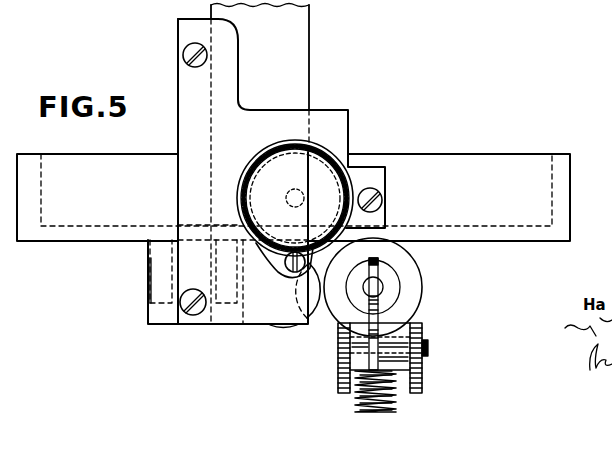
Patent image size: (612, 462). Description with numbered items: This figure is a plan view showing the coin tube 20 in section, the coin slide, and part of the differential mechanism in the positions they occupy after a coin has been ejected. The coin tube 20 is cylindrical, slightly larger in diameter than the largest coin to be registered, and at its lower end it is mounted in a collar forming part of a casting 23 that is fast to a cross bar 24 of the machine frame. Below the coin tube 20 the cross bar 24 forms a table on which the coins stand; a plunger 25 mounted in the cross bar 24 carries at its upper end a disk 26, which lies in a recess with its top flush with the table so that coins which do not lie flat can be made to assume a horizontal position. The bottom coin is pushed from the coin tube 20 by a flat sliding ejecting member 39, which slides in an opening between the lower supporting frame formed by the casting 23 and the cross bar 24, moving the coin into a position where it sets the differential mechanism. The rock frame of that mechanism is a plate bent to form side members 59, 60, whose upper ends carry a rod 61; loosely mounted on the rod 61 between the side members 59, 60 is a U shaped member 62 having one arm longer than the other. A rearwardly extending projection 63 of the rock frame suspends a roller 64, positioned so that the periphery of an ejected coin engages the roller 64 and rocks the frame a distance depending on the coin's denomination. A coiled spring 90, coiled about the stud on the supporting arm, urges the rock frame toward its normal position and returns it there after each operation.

The coin tube 20 is at (333, 165).
The casting 23 is at (343, 122).
The cross bar 24 is at (422, 162).
The plunger 25 is at (287, 200).
The disk 26 is at (267, 177).
The sliding ejecting member 39 is at (297, 52).
The side member 59 is at (415, 372).
The side member 60 is at (343, 357).
The rod 61 is at (378, 350).
The U shaped member 62 is at (372, 322).
The rearwardly extending projection 63 is at (392, 302).
The roller 64 is at (408, 278).
The coiled spring 90 is at (353, 395).